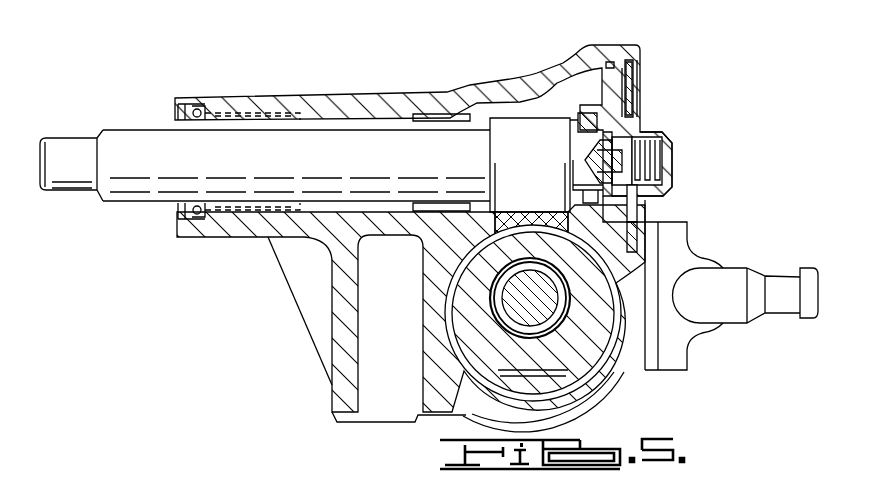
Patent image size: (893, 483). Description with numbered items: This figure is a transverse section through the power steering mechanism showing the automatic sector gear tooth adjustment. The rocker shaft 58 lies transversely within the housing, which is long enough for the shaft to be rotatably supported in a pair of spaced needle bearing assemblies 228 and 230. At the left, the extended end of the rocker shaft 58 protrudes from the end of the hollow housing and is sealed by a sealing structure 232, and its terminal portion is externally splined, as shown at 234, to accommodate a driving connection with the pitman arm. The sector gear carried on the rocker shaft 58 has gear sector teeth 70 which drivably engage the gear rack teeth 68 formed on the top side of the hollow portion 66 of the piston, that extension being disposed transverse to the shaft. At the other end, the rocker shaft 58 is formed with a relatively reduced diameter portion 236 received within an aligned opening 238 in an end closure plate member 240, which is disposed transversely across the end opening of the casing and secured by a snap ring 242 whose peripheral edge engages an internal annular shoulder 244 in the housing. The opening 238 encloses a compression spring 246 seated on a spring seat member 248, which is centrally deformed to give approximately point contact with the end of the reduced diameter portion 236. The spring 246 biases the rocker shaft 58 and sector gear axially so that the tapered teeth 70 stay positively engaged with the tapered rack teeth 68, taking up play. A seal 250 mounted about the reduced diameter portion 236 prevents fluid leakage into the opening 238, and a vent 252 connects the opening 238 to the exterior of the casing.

The rocker shaft 58 is at (299, 215).
The external splines 234 is at (70, 140).
The sealing structure 232 is at (205, 108).
The needle bearing assembly 228 is at (270, 112).
The needle bearing assembly 230 is at (430, 116).
The gear rack teeth 68 is at (546, 228).
The gear sector teeth 70 is at (470, 232).
The hollow portion 66 is at (585, 322).
The seal 250 is at (560, 112).
The internal annular shoulder 244 is at (612, 60).
The snap ring 242 is at (638, 75).
The reduced diameter portion 236 is at (632, 102).
The spring seat member 248 is at (637, 127).
The end closure plate member 240 is at (665, 137).
The compression spring 246 is at (664, 155).
The vent 252 is at (664, 180).
The opening 238 is at (640, 196).